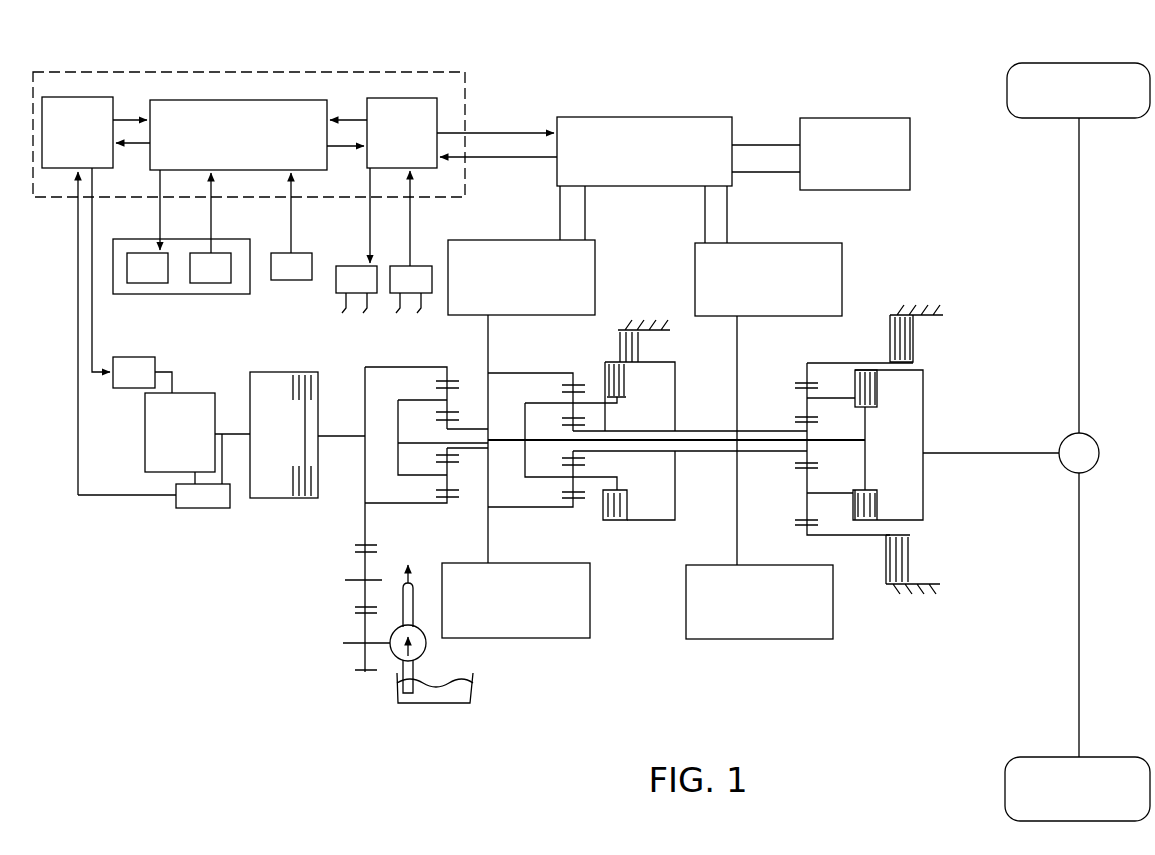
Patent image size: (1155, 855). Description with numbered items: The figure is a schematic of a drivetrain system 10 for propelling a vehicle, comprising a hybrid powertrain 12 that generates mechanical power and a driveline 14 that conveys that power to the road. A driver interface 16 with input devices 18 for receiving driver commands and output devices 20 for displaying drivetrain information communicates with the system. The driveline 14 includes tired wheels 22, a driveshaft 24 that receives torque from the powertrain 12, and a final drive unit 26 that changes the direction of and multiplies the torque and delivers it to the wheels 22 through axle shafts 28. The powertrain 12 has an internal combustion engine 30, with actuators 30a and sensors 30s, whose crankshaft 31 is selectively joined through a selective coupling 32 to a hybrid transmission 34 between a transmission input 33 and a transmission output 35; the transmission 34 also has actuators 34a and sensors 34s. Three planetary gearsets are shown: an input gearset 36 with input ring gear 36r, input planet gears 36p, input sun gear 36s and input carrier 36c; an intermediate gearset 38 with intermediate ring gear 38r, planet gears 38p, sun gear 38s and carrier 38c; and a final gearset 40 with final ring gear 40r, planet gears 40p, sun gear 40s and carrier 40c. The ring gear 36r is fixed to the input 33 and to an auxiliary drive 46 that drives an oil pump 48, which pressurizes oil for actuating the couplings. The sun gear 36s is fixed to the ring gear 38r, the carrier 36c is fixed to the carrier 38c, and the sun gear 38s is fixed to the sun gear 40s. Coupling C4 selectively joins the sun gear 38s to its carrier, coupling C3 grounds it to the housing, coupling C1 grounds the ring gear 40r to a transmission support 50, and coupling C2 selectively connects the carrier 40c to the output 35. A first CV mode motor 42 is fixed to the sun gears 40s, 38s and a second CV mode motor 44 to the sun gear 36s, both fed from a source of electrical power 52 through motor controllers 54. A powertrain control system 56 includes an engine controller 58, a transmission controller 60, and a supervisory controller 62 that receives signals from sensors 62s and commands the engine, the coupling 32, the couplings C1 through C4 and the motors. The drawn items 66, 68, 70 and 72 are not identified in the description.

The drivetrain system 10 is at (533, 745).
The hybrid powertrain 12 is at (246, 579).
The driveline 14 is at (1000, 582).
The driver interface 16 is at (157, 296).
The input devices 18 is at (210, 228).
The output devices 20 is at (147, 226).
The tired wheels 22 is at (1069, 100).
The driveshaft 24 is at (1015, 447).
The final drive unit 26 is at (1100, 447).
The axle shafts 28 is at (1082, 247).
The internal combustion engine 30 is at (170, 447).
The engine actuators 30a is at (140, 357).
The engine sensors 30s is at (214, 509).
The crankshaft 31 is at (235, 428).
The selective coupling 32 is at (269, 355).
The transmission input 33 is at (339, 436).
The hybrid transmission 34 is at (611, 77).
The transmission actuators 34a is at (368, 289).
The transmission sensors 34s is at (400, 289).
The transmission output 35 is at (923, 400).
The input gearset 36 is at (412, 357).
The input ring gear 36r is at (451, 381).
The input planet gears 36p is at (442, 398).
The input sun gear 36s is at (450, 428).
The input carrier 36c is at (398, 452).
The intermediate gearset 38 is at (541, 353).
The intermediate ring gear 38r is at (586, 382).
The intermediate planet gears 38p is at (570, 398).
The intermediate sun gear 38s is at (577, 426).
The intermediate carrier 38c is at (524, 458).
The final gearset 40 is at (800, 347).
The final ring gear 40r is at (812, 362).
The final planet gears 40p is at (807, 395).
The final sun gear 40s is at (812, 423).
The final carrier 40c is at (833, 489).
The first CV mode motor 42 is at (848, 241).
The second CV mode motor 44 is at (613, 247).
The auxiliary drive 46 is at (314, 641).
The oil pump 48 is at (427, 645).
The transmission support 50 is at (474, 690).
The source of electrical power 52 is at (845, 162).
The motor controllers 54 is at (634, 160).
The powertrain control system 56 is at (238, 72).
The engine controller 58 is at (67, 141).
The transmission controller 60 is at (392, 142).
The supervisory controller 62 is at (228, 144).
The sensors 62s is at (295, 282).
The intermediate shaft 66 is at (690, 431).
The transmission housing ground 68 is at (620, 329).
The brake 70 is at (874, 316).
The electric motor 72 is at (758, 288).
The first CV mode selective coupling C1 is at (917, 338).
The second CV mode selective coupling C2 is at (879, 388).
The fourth gear coupling C3 is at (644, 347).
The first/third gear coupling C4 is at (632, 380).